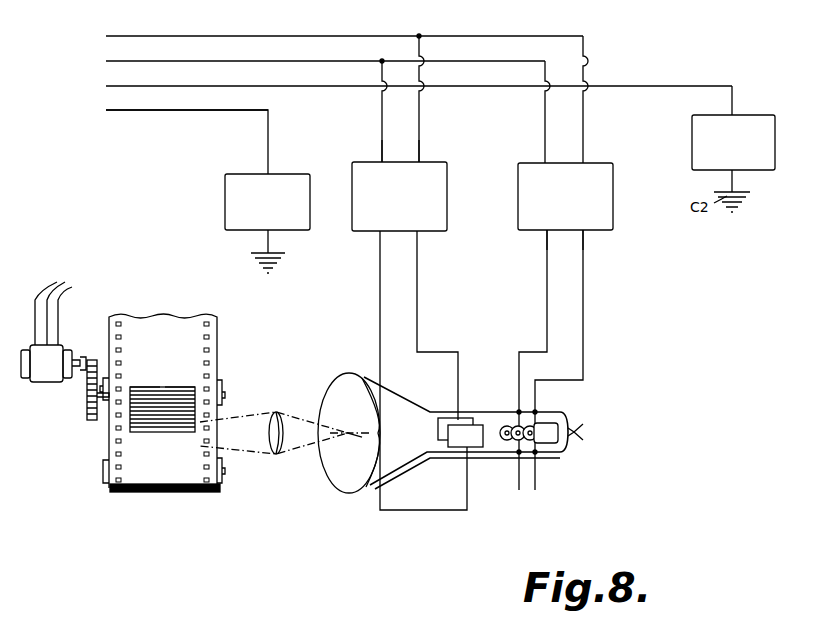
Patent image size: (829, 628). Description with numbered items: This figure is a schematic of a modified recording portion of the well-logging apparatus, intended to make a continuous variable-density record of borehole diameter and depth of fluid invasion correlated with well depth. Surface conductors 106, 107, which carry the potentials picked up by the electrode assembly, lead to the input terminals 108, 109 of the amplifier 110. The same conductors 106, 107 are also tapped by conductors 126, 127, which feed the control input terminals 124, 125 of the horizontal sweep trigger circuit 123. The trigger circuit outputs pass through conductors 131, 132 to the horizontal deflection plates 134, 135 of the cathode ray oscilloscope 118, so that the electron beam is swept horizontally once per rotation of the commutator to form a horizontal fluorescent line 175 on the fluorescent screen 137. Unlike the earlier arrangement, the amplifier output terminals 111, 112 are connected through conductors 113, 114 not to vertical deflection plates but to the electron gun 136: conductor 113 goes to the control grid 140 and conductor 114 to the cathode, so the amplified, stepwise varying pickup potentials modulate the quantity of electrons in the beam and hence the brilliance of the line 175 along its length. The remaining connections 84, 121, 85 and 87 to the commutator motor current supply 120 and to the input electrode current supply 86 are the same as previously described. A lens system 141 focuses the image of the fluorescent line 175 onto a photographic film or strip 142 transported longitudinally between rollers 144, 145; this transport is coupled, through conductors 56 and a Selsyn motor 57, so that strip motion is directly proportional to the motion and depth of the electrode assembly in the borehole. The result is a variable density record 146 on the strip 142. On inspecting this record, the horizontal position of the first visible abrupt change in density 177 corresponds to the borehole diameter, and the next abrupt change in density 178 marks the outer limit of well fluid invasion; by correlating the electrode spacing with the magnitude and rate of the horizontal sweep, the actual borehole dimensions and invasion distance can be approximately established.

The surface conductor 107 is at (213, 36).
The surface conductor 106 is at (232, 61).
The supply line 84 is at (283, 87).
The lead to commutator motor current supply 121 is at (163, 111).
The commutator motor current supply 120 is at (225, 202).
The conductor 126 is at (382, 121).
The conductor 127 is at (419, 118).
The control input terminal 124 is at (382, 160).
The control input terminal 125 is at (419, 160).
The horizontal sweep trigger circuit 123 is at (447, 199).
The input terminal 108 is at (545, 160).
The input terminal 109 is at (583, 160).
The amplifier 110 is at (613, 198).
The output terminal 111 is at (547, 232).
The output terminal 112 is at (583, 232).
The conductor 113 is at (547, 303).
The conductor 114 is at (583, 315).
The conductor 131 is at (380, 293).
The conductor 132 is at (417, 304).
The lead to input electrode current supply 85 is at (735, 113).
The input electrode current supply 86 is at (692, 125).
The ground connection 87 is at (735, 172).
The photographic film or strip 142 is at (218, 354).
The roller 144 is at (106, 484).
The variable density record 146 is at (164, 433).
The first visible abrupt change in density 177 is at (133, 387).
The next visible abrupt change in density 178 is at (181, 387).
The conductors 56 is at (56, 302).
The Selsyn motor 57 is at (49, 383).
The roller 145 is at (99, 416).
The lens system 141 is at (281, 412).
The fluorescent screen 137 is at (345, 491).
The cathode ray oscilloscope 118 is at (394, 464).
The horizontal fluorescent line 175 is at (363, 437).
The horizontal deflection plate 134 is at (458, 418).
The horizontal deflection plate 135 is at (470, 447).
The control grid 140 is at (520, 422).
The electron gun 136 is at (546, 445).